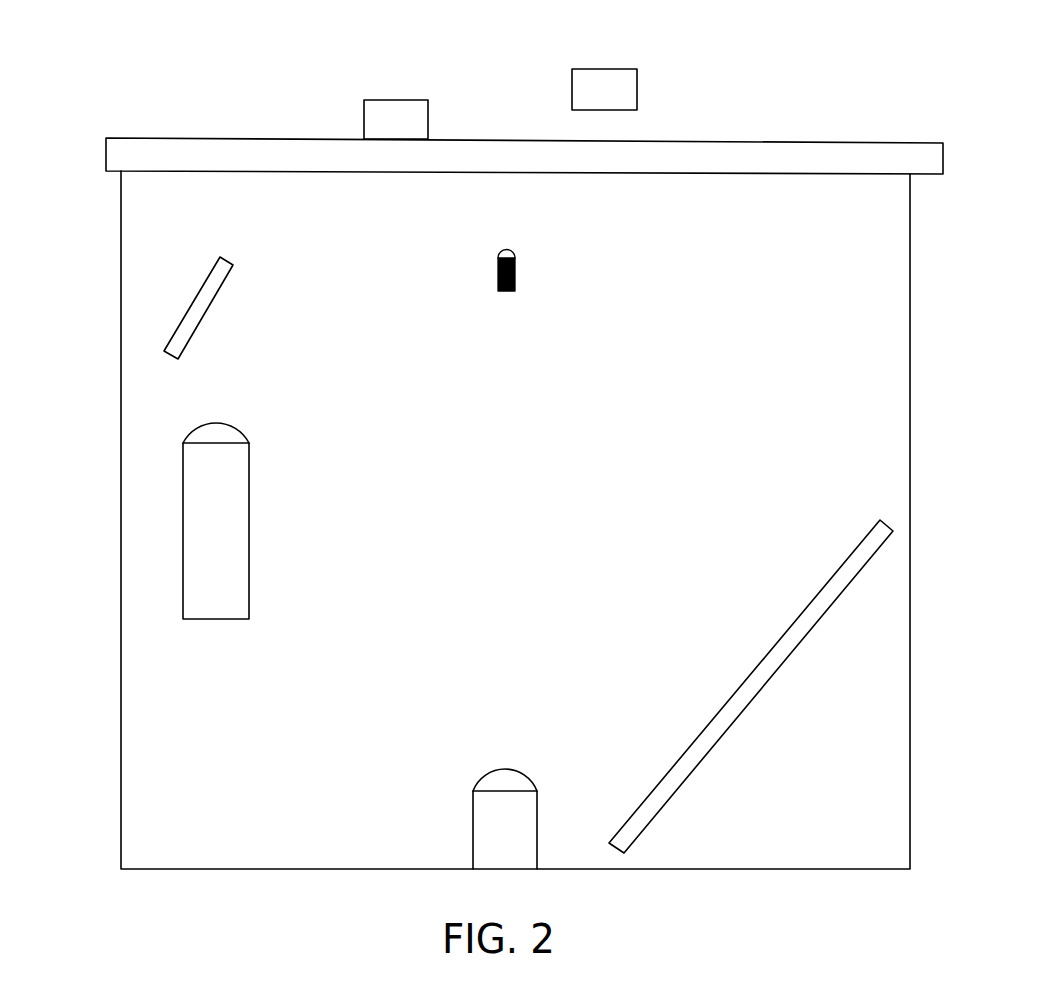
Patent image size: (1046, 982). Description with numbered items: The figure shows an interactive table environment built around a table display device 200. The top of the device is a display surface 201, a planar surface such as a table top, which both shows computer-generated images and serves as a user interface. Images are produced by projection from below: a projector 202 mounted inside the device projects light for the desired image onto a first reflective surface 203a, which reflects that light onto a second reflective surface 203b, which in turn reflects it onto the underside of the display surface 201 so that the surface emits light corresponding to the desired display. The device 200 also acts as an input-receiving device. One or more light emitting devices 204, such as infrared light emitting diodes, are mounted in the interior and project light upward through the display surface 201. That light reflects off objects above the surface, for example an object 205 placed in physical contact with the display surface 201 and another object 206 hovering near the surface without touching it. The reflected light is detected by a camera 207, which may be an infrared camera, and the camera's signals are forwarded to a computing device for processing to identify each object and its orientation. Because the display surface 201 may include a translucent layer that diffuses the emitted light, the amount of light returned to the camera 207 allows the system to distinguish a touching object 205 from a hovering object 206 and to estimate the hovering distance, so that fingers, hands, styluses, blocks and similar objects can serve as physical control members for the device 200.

The table display device 200 is at (776, 71).
The display surface 201 is at (185, 138).
The projector 202 is at (183, 523).
The first reflective surface 203a is at (192, 302).
The second reflective surface 203b is at (757, 692).
The light emitting device 204 is at (515, 257).
The object in physical contact with the display surface 205 is at (397, 100).
The hovering object 206 is at (613, 69).
The camera 207 is at (473, 791).